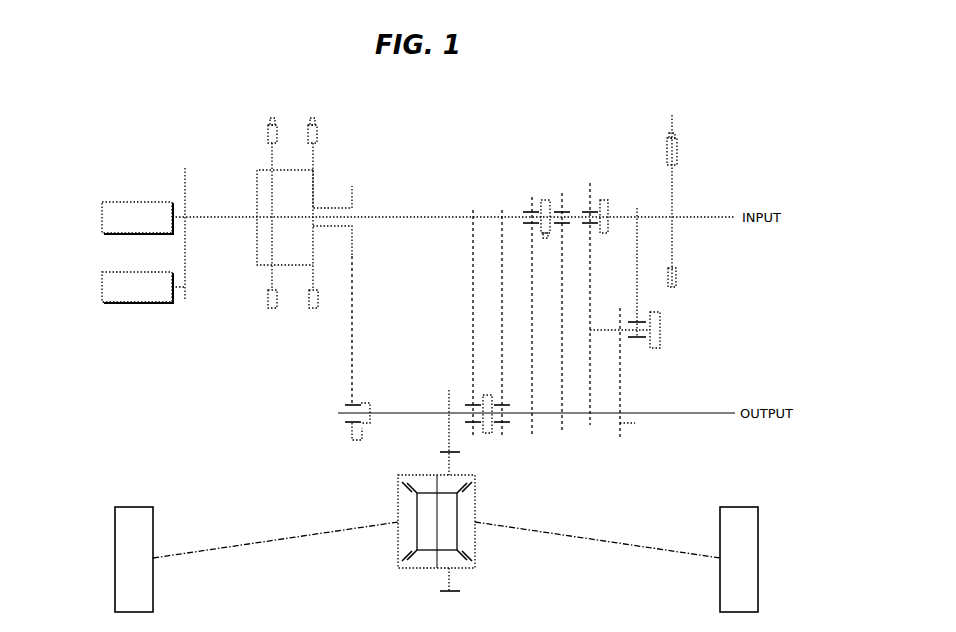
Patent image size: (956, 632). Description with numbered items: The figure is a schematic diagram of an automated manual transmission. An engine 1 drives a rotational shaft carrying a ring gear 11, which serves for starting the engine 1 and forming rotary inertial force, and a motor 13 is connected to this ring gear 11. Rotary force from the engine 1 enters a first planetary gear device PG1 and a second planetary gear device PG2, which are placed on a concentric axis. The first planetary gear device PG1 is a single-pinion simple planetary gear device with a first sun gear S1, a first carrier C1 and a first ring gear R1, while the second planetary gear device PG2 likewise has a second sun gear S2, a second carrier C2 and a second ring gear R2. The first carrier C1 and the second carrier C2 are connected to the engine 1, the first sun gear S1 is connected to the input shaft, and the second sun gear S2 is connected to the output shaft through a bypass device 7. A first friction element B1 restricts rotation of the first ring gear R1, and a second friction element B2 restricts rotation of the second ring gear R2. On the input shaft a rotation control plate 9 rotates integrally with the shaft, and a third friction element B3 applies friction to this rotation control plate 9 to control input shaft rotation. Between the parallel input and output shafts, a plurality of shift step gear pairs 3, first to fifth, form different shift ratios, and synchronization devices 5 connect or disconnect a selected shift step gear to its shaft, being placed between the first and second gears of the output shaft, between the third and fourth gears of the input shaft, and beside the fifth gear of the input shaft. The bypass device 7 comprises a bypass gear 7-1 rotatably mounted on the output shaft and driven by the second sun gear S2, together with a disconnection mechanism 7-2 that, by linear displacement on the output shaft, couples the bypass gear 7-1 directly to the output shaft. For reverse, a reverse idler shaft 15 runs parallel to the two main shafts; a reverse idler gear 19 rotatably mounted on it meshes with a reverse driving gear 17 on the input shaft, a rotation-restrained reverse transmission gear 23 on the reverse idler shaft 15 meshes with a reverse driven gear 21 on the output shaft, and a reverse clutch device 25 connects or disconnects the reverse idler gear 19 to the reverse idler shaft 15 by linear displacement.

The engine 1 is at (128, 201).
The ring gear 11 is at (185, 167).
The motor 13 is at (128, 304).
The shift step gear pairs 3 is at (470, 178).
The synchronization device 5 is at (545, 238).
The bypass device 7 is at (301, 418).
The bypass gear 7-1 is at (345, 405).
The disconnection mechanism 7-2 is at (352, 440).
The rotation control plate 9 is at (678, 150).
The reverse idler shaft 15 is at (665, 327).
The reverse driving gear 17 is at (637, 207).
The reverse idler gear 19 is at (621, 342).
The reverse driven gear 21 is at (622, 423).
The reverse transmission gear 23 is at (636, 352).
The reverse clutch device 25 is at (661, 342).
The first friction element B1 is at (273, 117).
The second friction element B2 is at (313, 117).
The third friction element B3 is at (672, 132).
The first carrier C1 is at (264, 169).
The second carrier C2 is at (297, 166).
The first sun gear S1 is at (272, 225).
The second sun gear S2 is at (313, 206).
The first ring gear R1 is at (267, 298).
The second ring gear R2 is at (318, 298).
The first planetary gear device PG1 is at (272, 314).
The second planetary gear device PG2 is at (313, 314).